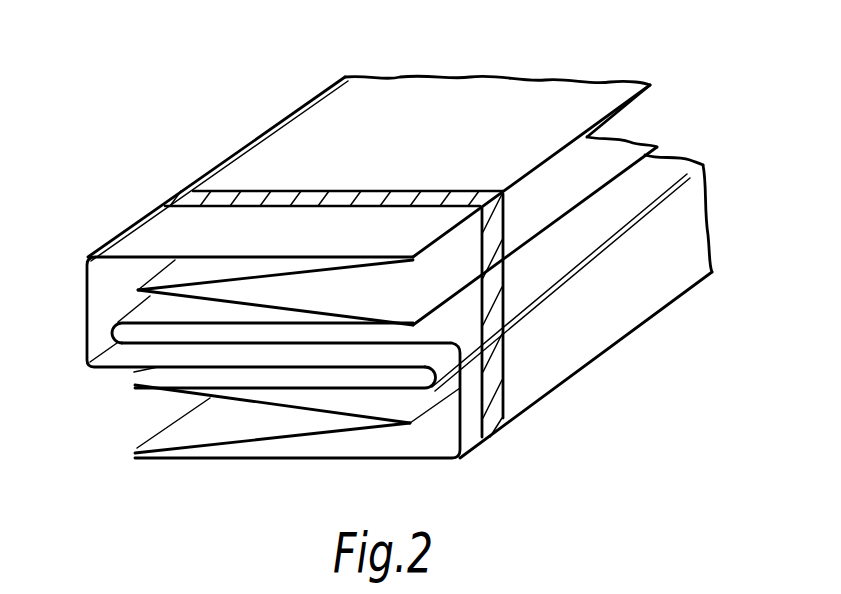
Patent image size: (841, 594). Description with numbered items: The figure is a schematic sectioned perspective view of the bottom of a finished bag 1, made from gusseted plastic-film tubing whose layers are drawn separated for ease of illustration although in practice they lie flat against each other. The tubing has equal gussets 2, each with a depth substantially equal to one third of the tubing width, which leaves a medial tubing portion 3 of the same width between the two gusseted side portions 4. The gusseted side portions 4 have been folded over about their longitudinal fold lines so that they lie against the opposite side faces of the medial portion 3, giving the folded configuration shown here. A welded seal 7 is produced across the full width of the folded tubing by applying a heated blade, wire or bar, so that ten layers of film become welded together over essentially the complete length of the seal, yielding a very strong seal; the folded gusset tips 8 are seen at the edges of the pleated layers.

The laminated sheet structure 1 is at (282, 102).
The gusset 2 is at (173, 287).
The medial tubing portion 3 is at (133, 343).
The gusseted side portion 4 is at (164, 236).
The welded seal 7 is at (227, 190).
The pleat tip 8 is at (137, 290).